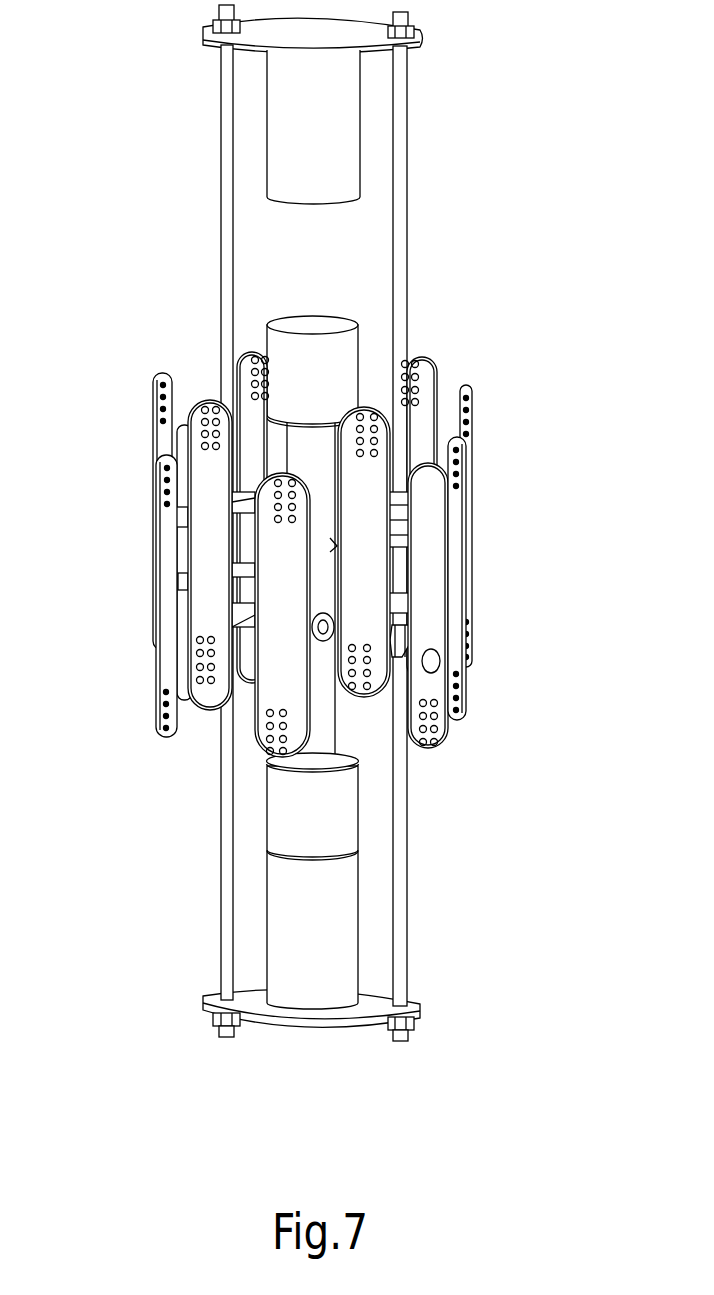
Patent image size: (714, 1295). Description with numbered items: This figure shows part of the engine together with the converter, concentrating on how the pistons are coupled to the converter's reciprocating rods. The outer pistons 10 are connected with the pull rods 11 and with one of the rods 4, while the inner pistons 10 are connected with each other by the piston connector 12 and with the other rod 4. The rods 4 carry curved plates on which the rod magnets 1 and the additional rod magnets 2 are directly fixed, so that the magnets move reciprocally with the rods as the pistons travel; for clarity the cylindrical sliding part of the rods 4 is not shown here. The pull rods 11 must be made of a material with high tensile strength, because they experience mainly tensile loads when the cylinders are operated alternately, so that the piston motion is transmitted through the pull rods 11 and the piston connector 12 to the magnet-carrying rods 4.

The rod magnets 1 is at (130, 551).
The additional rod magnets 2 is at (124, 545).
The rods 4 is at (462, 577).
The pistons 10 is at (196, 529).
The pull rods 11 is at (231, 523).
The piston connector 12 is at (450, 451).